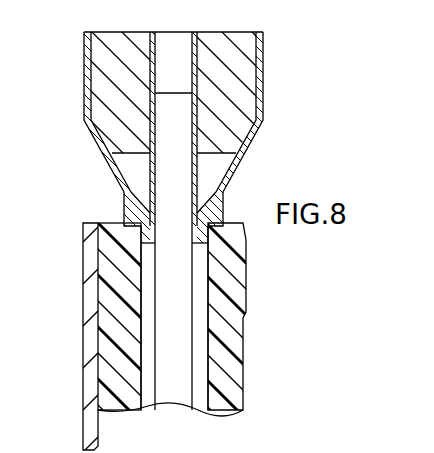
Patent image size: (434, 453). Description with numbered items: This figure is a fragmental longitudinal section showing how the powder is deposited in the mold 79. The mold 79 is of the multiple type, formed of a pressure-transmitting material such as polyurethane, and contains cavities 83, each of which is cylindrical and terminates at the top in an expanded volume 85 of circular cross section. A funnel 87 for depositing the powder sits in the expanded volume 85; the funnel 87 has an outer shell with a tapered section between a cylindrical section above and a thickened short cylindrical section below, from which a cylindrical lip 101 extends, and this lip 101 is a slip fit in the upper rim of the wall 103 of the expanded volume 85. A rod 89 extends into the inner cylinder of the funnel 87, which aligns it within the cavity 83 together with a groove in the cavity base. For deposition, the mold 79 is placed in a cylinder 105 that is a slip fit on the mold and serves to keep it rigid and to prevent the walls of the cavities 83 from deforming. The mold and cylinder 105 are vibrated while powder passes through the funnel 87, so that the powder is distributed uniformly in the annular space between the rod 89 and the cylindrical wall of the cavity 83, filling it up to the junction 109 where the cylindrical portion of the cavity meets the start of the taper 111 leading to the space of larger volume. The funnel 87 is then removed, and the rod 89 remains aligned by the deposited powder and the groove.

The mold 79 is at (236, 345).
The cavity 83 is at (193, 322).
The expanded volume 85 is at (196, 278).
The funnel 87 is at (300, 88).
The rod 89 is at (169, 397).
The cylindrical lip 101 is at (200, 236).
The wall of the expanded volume 103 is at (141, 236).
The cylinder 105 is at (83, 335).
The junction 109 is at (243, 313).
The taper 111 is at (98, 299).